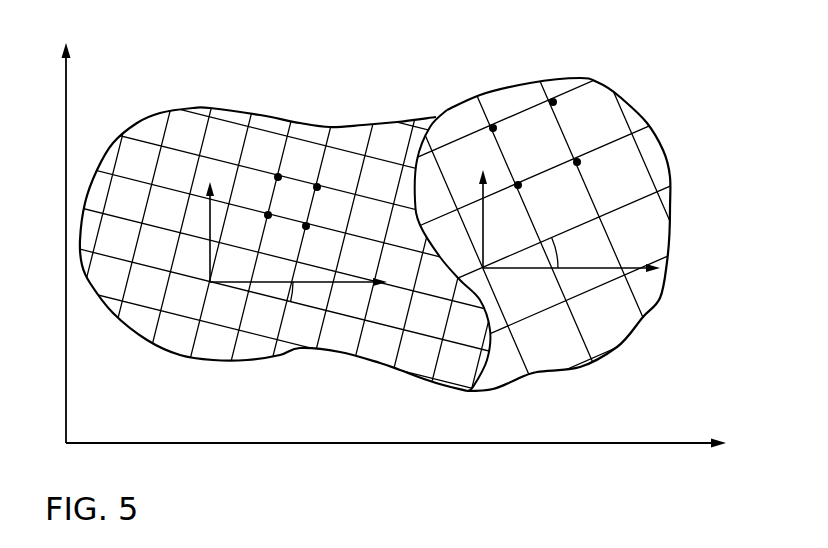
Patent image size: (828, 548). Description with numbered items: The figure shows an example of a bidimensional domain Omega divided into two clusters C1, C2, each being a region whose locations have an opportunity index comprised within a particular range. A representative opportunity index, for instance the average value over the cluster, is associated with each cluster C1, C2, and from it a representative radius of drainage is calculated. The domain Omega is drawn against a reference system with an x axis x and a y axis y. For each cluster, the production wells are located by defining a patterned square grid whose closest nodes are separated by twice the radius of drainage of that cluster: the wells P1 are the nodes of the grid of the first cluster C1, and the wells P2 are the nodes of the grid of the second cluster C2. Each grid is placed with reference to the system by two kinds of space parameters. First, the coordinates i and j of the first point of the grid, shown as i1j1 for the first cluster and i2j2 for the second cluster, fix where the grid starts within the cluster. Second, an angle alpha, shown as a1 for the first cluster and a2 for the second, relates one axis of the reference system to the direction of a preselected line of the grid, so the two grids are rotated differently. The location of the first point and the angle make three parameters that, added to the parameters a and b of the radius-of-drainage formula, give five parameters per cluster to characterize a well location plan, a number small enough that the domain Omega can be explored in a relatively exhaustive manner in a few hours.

The first cluster C1 is at (183, 135).
The second cluster C2 is at (630, 177).
The production wells of the first cluster P1 is at (549, 151).
The production wells of the second cluster P2 is at (304, 192).
The angle alpha of the first cluster a1 is at (566, 253).
The angle alpha of the second cluster a2 is at (305, 294).
The coordinates of the first point of the first cluster's grid i1j1 is at (468, 282).
The coordinates of the first point of the second cluster's grid i2j2 is at (210, 282).
The domain Omega is at (354, 394).
The x axis of the reference system x is at (396, 459).
The y axis of the reference system y is at (77, 243).